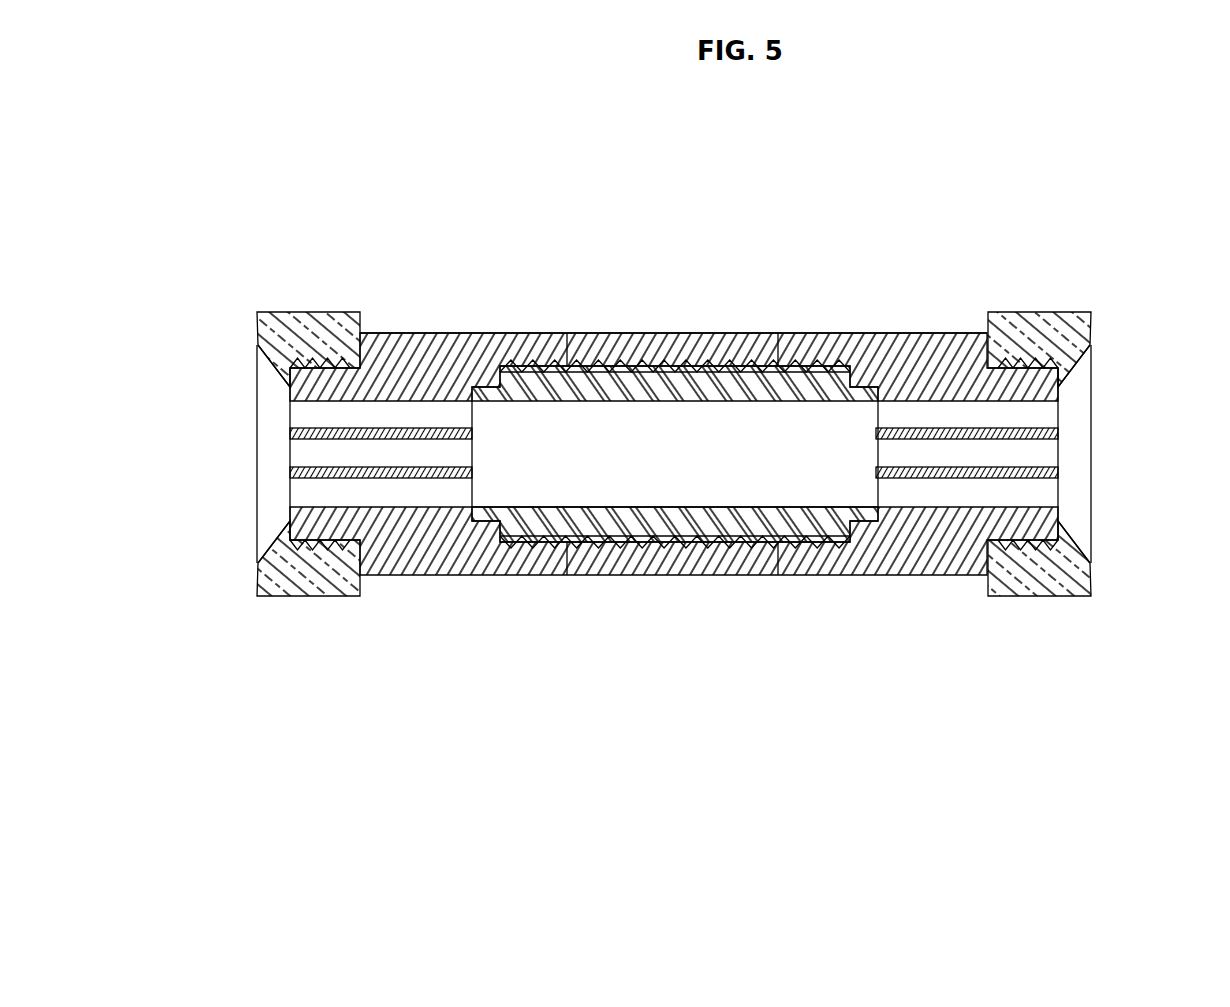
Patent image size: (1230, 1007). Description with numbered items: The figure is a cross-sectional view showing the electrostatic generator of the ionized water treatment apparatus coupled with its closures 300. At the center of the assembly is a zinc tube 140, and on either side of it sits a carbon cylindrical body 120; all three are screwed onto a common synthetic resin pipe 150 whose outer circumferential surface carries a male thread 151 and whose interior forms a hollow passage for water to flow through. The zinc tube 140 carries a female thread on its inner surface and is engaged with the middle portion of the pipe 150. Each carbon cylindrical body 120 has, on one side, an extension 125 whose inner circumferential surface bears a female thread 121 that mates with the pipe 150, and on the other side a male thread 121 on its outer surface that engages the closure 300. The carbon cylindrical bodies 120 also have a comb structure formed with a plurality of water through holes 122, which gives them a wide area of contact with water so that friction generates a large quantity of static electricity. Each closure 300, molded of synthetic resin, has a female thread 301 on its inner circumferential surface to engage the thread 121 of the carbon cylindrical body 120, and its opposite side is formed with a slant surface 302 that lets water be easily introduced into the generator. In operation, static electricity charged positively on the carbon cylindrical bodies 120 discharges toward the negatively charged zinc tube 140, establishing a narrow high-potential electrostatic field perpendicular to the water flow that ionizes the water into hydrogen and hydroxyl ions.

The carbon cylindrical body 120 is at (408, 333).
The male thread 121 is at (522, 362).
The water through holes 122 is at (300, 448).
The extension 125 is at (456, 334).
The zinc tube 140 is at (690, 333).
The pipe 150 is at (657, 505).
The male thread 151 is at (636, 362).
The closure 300 is at (290, 312).
The female thread 301 is at (293, 520).
The slant surface 302 is at (283, 378).